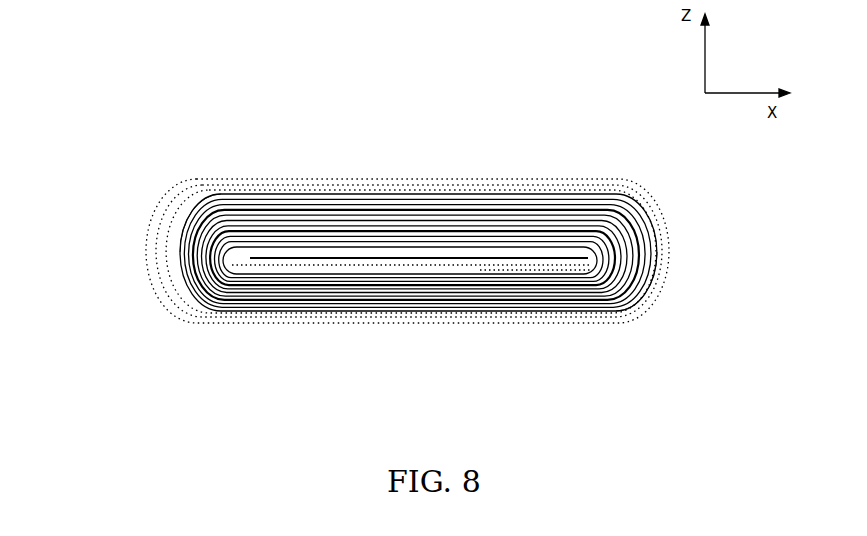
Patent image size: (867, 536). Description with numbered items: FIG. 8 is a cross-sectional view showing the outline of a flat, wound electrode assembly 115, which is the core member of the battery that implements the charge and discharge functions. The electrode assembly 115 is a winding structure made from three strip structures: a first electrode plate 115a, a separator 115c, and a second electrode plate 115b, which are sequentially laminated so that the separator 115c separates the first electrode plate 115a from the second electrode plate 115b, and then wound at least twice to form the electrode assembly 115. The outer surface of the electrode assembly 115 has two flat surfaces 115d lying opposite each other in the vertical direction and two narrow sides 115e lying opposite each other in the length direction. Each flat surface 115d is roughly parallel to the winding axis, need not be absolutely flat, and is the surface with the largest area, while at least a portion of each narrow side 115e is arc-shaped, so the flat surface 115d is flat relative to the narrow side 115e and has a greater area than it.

The electrode assembly 115 is at (414, 236).
The first electrode plate 115a is at (416, 208).
The second electrode plate 115b is at (348, 196).
The separator 115c is at (470, 190).
The flat surface 115d is at (556, 172).
The narrow side 115e is at (146, 289).